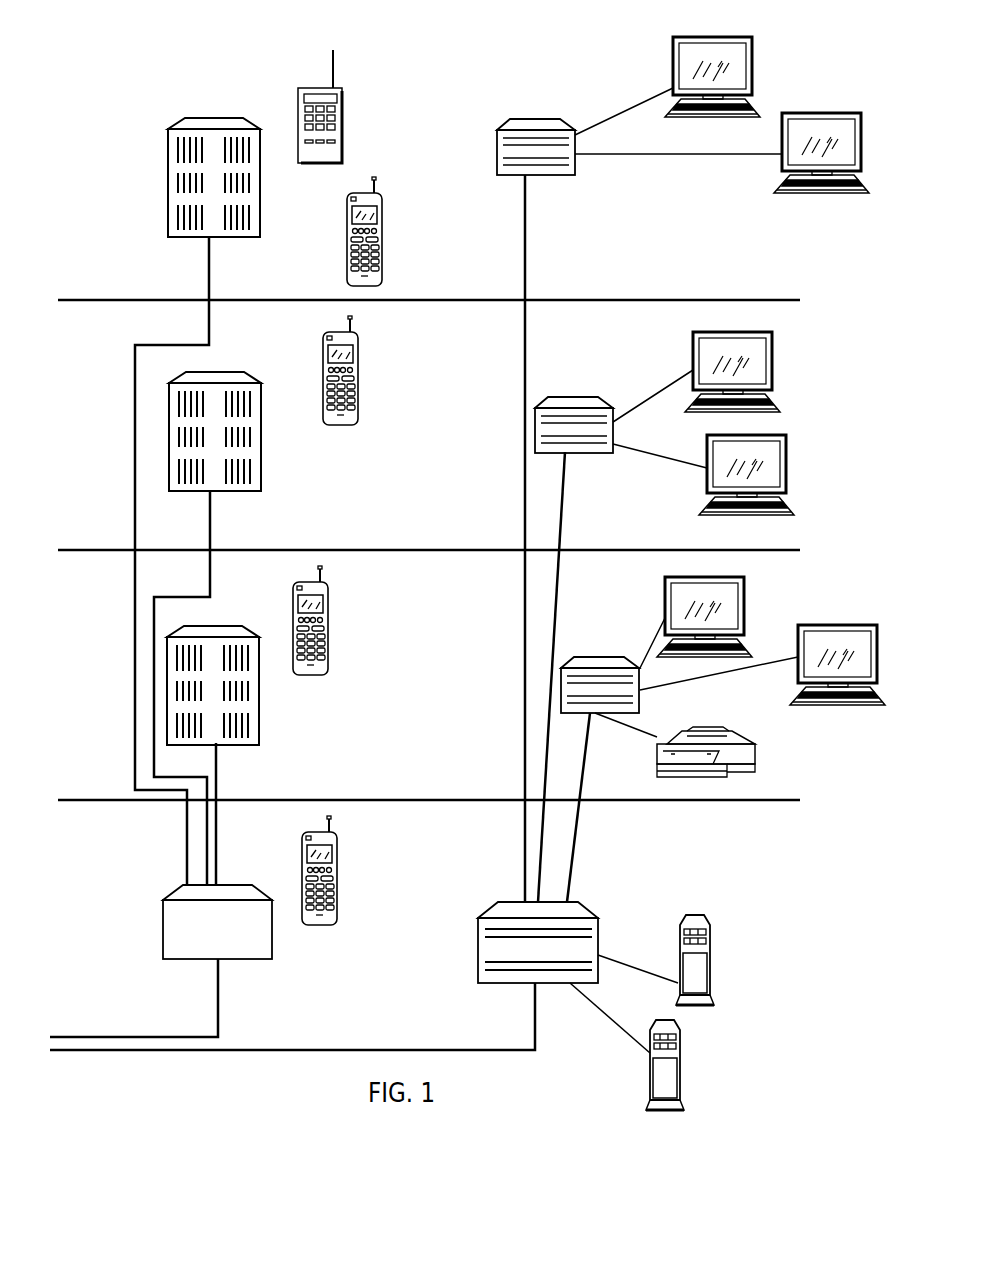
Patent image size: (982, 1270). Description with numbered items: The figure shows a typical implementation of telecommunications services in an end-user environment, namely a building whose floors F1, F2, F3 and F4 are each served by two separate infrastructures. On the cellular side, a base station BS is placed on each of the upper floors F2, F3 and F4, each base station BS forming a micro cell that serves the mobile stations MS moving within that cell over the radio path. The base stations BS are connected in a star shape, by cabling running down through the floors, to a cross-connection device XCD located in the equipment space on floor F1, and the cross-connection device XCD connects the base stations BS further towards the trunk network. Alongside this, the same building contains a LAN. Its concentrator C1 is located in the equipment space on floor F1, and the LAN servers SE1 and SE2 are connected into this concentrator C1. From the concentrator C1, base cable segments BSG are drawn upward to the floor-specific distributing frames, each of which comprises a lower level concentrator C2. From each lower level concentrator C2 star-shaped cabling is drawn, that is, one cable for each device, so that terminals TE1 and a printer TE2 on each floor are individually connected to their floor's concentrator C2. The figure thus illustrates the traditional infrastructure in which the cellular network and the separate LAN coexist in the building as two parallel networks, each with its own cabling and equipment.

The base station BS is at (209, 120).
The mobile station MS is at (343, 92).
The lower level concentrator C2 is at (536, 119).
The concentrator C1 is at (599, 924).
The terminal TE1 is at (752, 54).
The printer TE2 is at (709, 727).
The base cable segment BSG is at (533, 291).
The element LAN is at (522, 649).
The cross-connection device XCD is at (233, 885).
The LAN server SE1 is at (682, 1053).
The LAN server SE2 is at (712, 950).
The floor F1 is at (105, 856).
The floor F2 is at (105, 601).
The floor F3 is at (105, 353).
The floor F4 is at (105, 110).